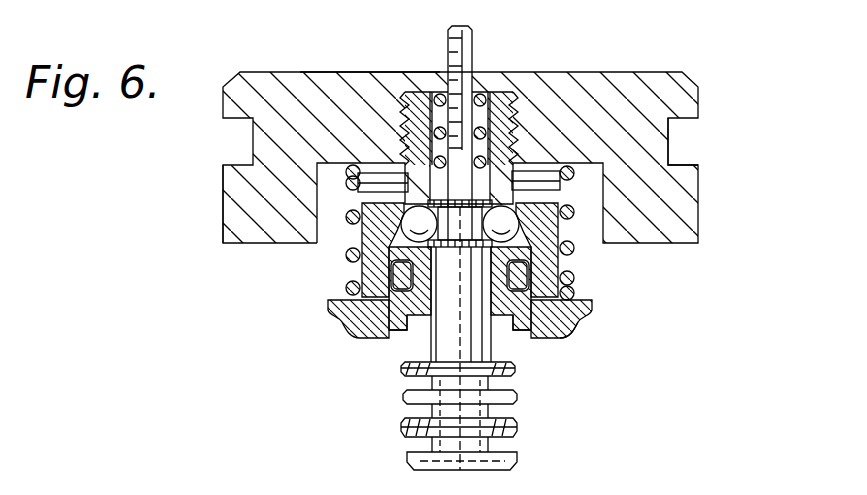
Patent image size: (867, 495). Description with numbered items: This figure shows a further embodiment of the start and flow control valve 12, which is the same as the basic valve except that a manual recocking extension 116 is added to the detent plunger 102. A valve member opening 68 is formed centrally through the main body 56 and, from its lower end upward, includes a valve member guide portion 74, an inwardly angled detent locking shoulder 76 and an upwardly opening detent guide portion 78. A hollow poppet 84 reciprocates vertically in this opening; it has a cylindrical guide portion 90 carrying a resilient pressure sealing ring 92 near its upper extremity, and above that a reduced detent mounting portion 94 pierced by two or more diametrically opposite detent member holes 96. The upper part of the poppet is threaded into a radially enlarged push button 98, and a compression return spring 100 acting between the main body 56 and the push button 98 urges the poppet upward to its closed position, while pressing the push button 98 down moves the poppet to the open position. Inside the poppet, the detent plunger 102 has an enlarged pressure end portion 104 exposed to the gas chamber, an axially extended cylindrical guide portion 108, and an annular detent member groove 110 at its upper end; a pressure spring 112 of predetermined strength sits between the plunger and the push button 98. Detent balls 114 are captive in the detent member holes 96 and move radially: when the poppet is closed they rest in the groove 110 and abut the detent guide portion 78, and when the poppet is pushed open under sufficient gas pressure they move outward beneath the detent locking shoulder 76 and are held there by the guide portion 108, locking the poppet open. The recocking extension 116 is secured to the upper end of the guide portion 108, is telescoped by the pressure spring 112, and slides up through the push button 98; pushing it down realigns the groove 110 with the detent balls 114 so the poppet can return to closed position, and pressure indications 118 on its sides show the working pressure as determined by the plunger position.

The start and flow control valve 12 is at (223, 178).
The main body 56 is at (343, 318).
The valve member opening 68 is at (392, 334).
The valve member guide portion 74 is at (567, 328).
The detent locking shoulder 76 is at (563, 265).
The detent guide portion 78 is at (560, 245).
The hollow poppet 84 is at (523, 336).
The cylindrical guide portion 90 is at (502, 318).
The resilient pressure sealing ring 92 is at (330, 299).
The detent mounting portion 94 is at (352, 72).
The detent member holes 96 is at (405, 217).
The push button 98 is at (594, 78).
The return spring 100 is at (596, 165).
The detent plunger 102 is at (450, 310).
The pressure end portion 104 is at (457, 387).
The cylindrical guide portion 108 is at (442, 343).
The detent member groove 110 is at (401, 231).
The pressure spring 112 is at (430, 91).
The detent balls 114 is at (520, 193).
The manual recocking extension 116 is at (448, 48).
The pressure indications 118 is at (474, 46).